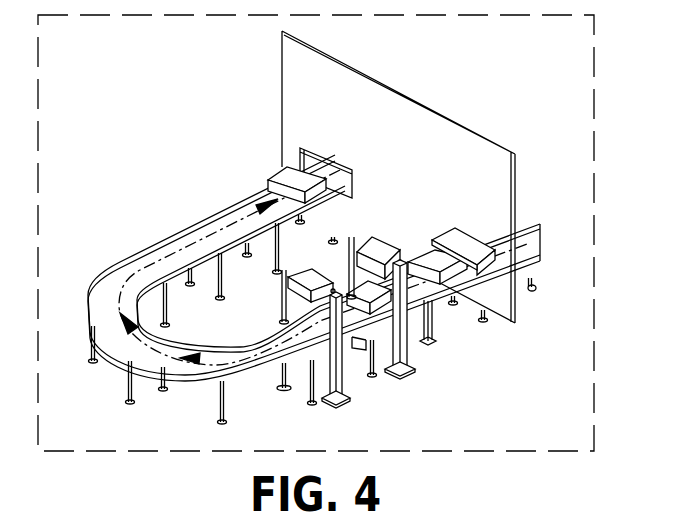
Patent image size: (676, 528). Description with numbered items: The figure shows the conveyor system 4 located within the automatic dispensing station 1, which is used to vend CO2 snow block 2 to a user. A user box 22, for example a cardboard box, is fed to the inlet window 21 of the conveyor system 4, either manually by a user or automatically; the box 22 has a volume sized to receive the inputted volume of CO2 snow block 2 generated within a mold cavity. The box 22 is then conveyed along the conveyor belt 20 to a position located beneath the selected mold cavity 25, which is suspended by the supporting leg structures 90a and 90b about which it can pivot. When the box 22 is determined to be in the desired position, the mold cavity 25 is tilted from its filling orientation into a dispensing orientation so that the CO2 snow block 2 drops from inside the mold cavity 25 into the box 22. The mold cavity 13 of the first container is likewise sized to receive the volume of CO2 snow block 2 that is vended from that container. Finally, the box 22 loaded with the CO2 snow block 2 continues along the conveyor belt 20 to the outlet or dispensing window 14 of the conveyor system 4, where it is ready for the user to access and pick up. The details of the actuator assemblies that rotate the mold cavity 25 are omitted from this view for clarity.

The automatic dispensing station 1 is at (613, 70).
The CO2 snow block 2 is at (329, 235).
The conveyor system 4 is at (128, 190).
The mold cavity 13 is at (320, 278).
The dispensing window 14 is at (308, 152).
The conveyor belt 20 is at (152, 358).
The inlet window 21 is at (473, 240).
The user box 22 is at (272, 182).
The mold cavity 25 is at (380, 249).
The support leg structure 90a is at (408, 368).
The support leg structure 90b is at (358, 345).